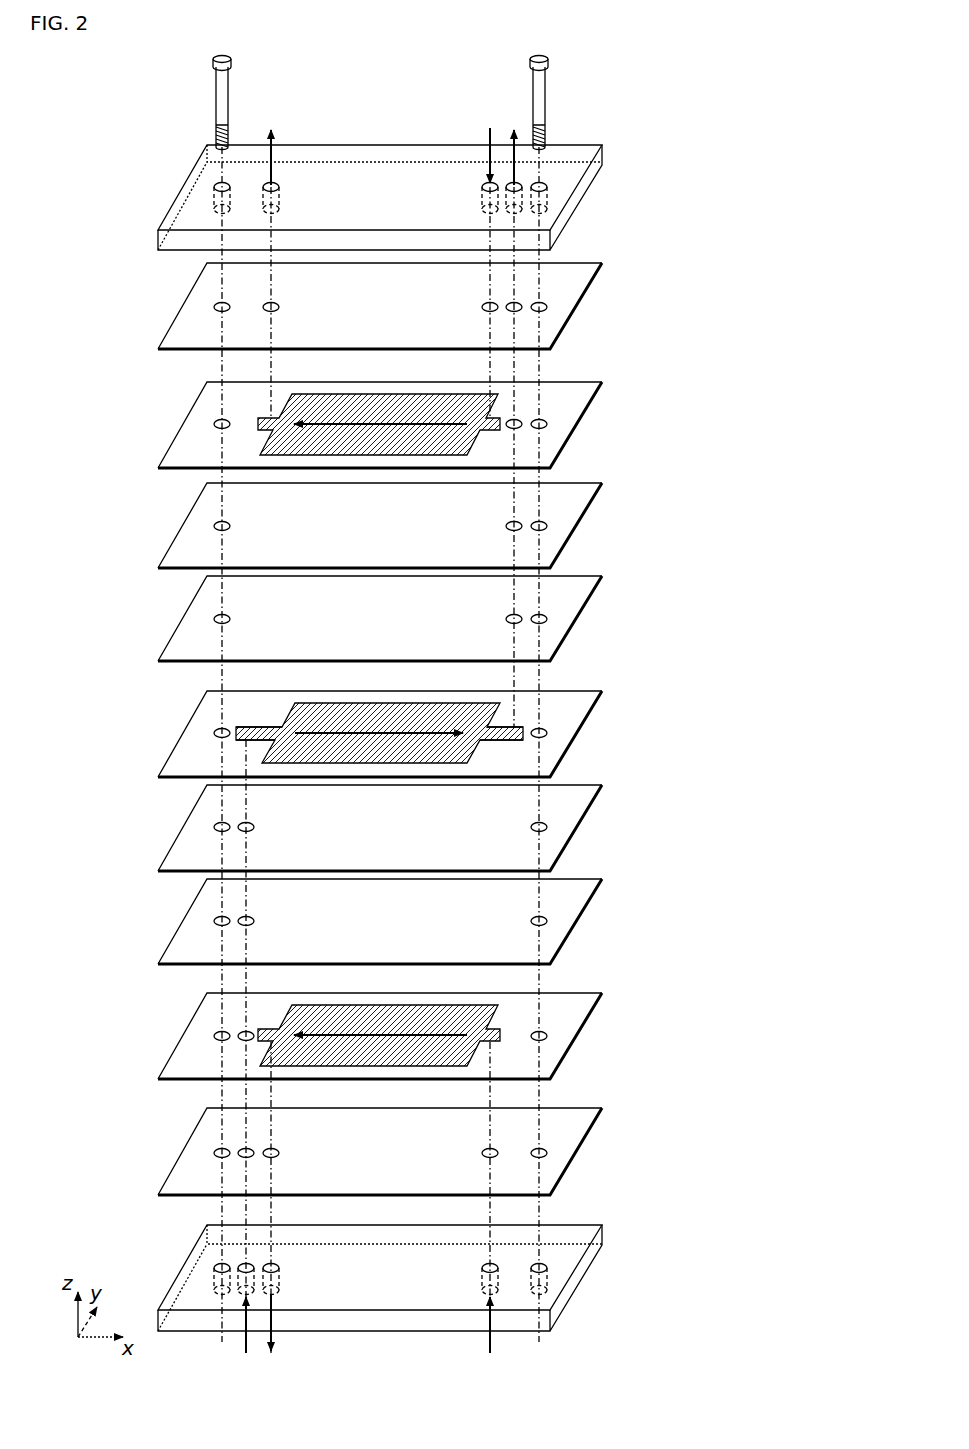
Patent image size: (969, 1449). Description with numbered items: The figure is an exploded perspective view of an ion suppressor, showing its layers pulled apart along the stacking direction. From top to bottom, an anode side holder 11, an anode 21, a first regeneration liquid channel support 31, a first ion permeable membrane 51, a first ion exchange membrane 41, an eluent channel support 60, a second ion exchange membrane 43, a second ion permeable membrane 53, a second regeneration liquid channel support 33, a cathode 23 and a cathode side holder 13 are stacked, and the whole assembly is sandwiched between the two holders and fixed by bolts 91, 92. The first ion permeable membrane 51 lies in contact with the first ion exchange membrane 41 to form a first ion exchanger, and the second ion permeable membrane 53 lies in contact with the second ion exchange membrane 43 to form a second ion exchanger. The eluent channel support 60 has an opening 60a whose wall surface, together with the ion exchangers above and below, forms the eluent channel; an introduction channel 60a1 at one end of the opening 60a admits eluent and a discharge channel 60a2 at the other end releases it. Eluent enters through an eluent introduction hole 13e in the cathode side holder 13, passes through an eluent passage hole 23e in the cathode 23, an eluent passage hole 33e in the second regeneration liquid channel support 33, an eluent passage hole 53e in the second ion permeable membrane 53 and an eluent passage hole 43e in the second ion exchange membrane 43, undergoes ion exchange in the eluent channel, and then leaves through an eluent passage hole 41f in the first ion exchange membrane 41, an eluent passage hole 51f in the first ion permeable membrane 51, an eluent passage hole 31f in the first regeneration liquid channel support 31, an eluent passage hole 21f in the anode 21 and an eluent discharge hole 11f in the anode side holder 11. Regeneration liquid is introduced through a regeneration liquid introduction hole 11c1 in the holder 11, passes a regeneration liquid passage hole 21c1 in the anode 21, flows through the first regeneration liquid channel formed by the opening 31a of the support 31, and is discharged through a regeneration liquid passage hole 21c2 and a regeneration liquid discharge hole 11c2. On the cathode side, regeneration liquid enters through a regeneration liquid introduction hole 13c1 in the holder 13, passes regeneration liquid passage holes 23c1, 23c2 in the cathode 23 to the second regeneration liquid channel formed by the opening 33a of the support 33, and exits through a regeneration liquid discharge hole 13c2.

The anode side holder 11 is at (577, 194).
The anode 21 is at (568, 300).
The first regeneration liquid channel support 31 is at (568, 421).
The first ion permeable membrane 51 is at (567, 525).
The first ion exchange membrane 41 is at (567, 619).
The eluent channel support 60 is at (568, 728).
The second ion exchange membrane 43 is at (568, 825).
The second ion permeable membrane 53 is at (568, 918).
The second regeneration liquid channel support 33 is at (568, 1031).
The cathode 23 is at (568, 1158).
The cathode side holder 13 is at (577, 1277).
The bolt 91 is at (229, 90).
The bolt 92 is at (546, 90).
The eluent discharge hole 11f is at (521, 183).
The regeneration liquid introduction hole 11c1 is at (481, 186).
The regeneration liquid discharge hole 11c2 is at (281, 187).
The eluent passage hole 21f is at (521, 302).
The regeneration liquid passage hole 21c1 is at (481, 308).
The regeneration liquid passage hole 21c2 is at (281, 308).
The opening 31a is at (382, 408).
The eluent passage hole 31f is at (521, 419).
The eluent passage hole 51f is at (506, 524).
The eluent passage hole 41f is at (506, 617).
The opening 60a is at (332, 716).
The introduction channel 60a1 is at (255, 725).
The discharge channel 60a2 is at (504, 725).
The eluent passage hole 43e is at (257, 825).
The eluent passage hole 53e is at (257, 919).
The eluent passage hole 33e is at (254, 1030).
The opening 33a is at (357, 1017).
The eluent passage hole 23e is at (255, 1147).
The regeneration liquid passage hole 23c1 is at (481, 1154).
The regeneration liquid passage hole 23c2 is at (366, 1172).
The eluent introduction hole 13e is at (255, 1263).
The regeneration liquid introduction hole 13c1 is at (481, 1268).
The regeneration liquid discharge hole 13c2 is at (281, 1268).